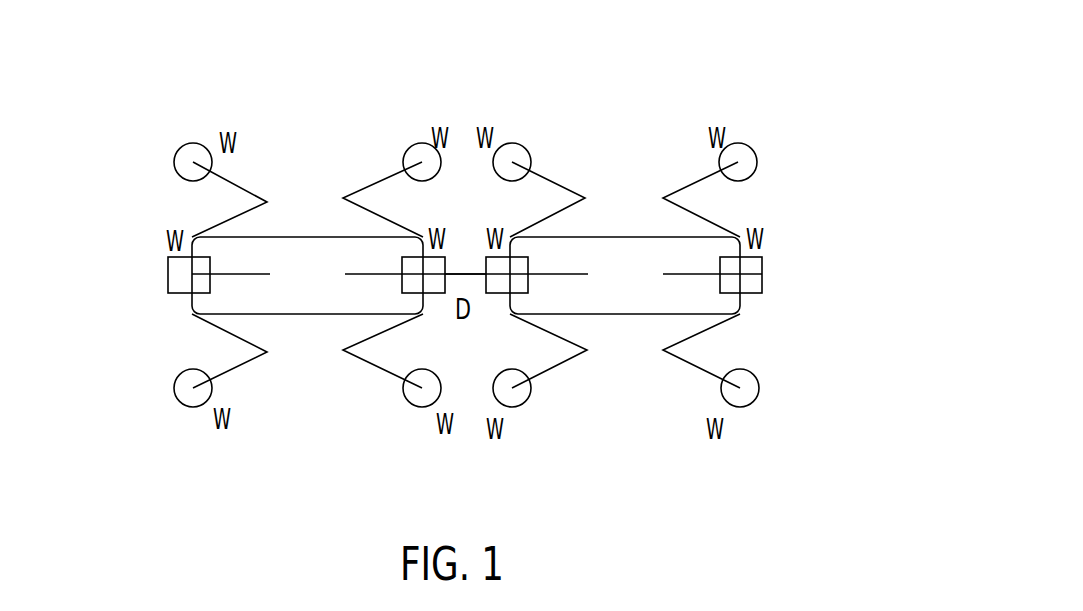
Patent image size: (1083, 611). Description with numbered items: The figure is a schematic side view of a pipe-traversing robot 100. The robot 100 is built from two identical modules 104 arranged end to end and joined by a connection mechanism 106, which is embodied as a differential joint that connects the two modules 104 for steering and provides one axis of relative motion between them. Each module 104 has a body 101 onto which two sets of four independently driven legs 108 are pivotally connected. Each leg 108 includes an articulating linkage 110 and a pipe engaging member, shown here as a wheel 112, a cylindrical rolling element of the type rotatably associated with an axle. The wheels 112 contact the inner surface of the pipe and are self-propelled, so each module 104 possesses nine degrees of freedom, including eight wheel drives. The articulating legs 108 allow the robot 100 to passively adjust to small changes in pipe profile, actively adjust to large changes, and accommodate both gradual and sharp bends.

The robot 100 is at (755, 78).
The body 101 is at (300, 237).
The module 104 is at (314, 404).
The connection mechanism 106 is at (466, 256).
The leg 108 is at (786, 148).
The linkage 110 is at (558, 184).
The wheel 112 is at (528, 151).